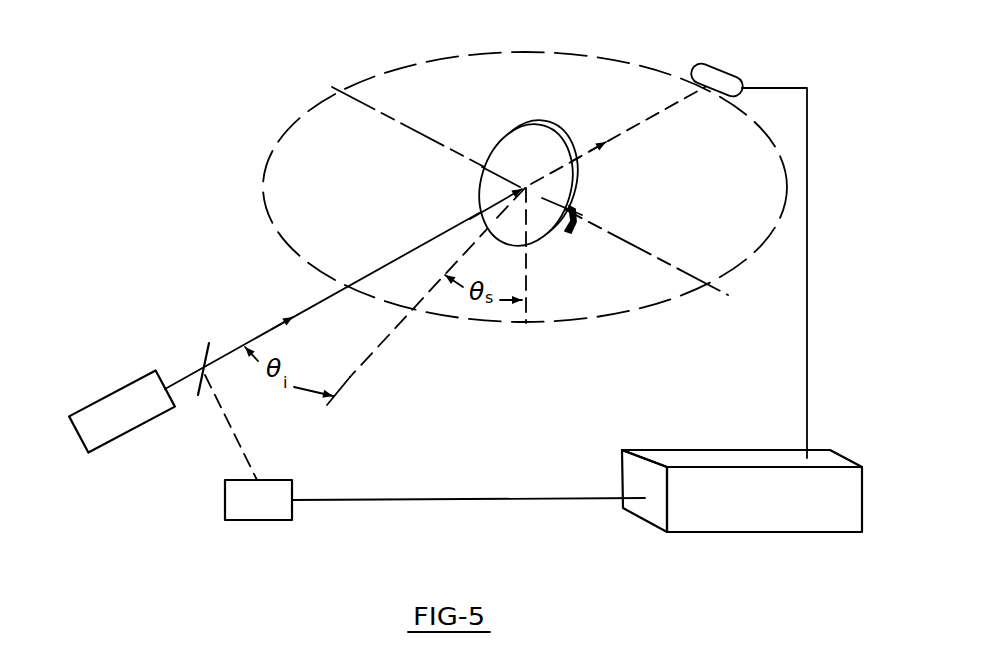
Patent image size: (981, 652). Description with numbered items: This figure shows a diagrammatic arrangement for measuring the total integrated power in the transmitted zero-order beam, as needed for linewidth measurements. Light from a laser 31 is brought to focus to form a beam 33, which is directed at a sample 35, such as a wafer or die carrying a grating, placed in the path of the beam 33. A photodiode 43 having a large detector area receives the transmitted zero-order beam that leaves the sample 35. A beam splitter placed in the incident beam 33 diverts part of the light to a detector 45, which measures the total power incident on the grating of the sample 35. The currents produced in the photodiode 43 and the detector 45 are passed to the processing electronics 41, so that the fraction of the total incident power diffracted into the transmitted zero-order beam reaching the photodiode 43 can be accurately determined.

The laser 31 is at (115, 390).
The beam 33 is at (188, 372).
The sample 35 is at (578, 193).
The processing electronics 41 is at (682, 460).
The photodiode 43 is at (731, 70).
The detector 45 is at (291, 481).